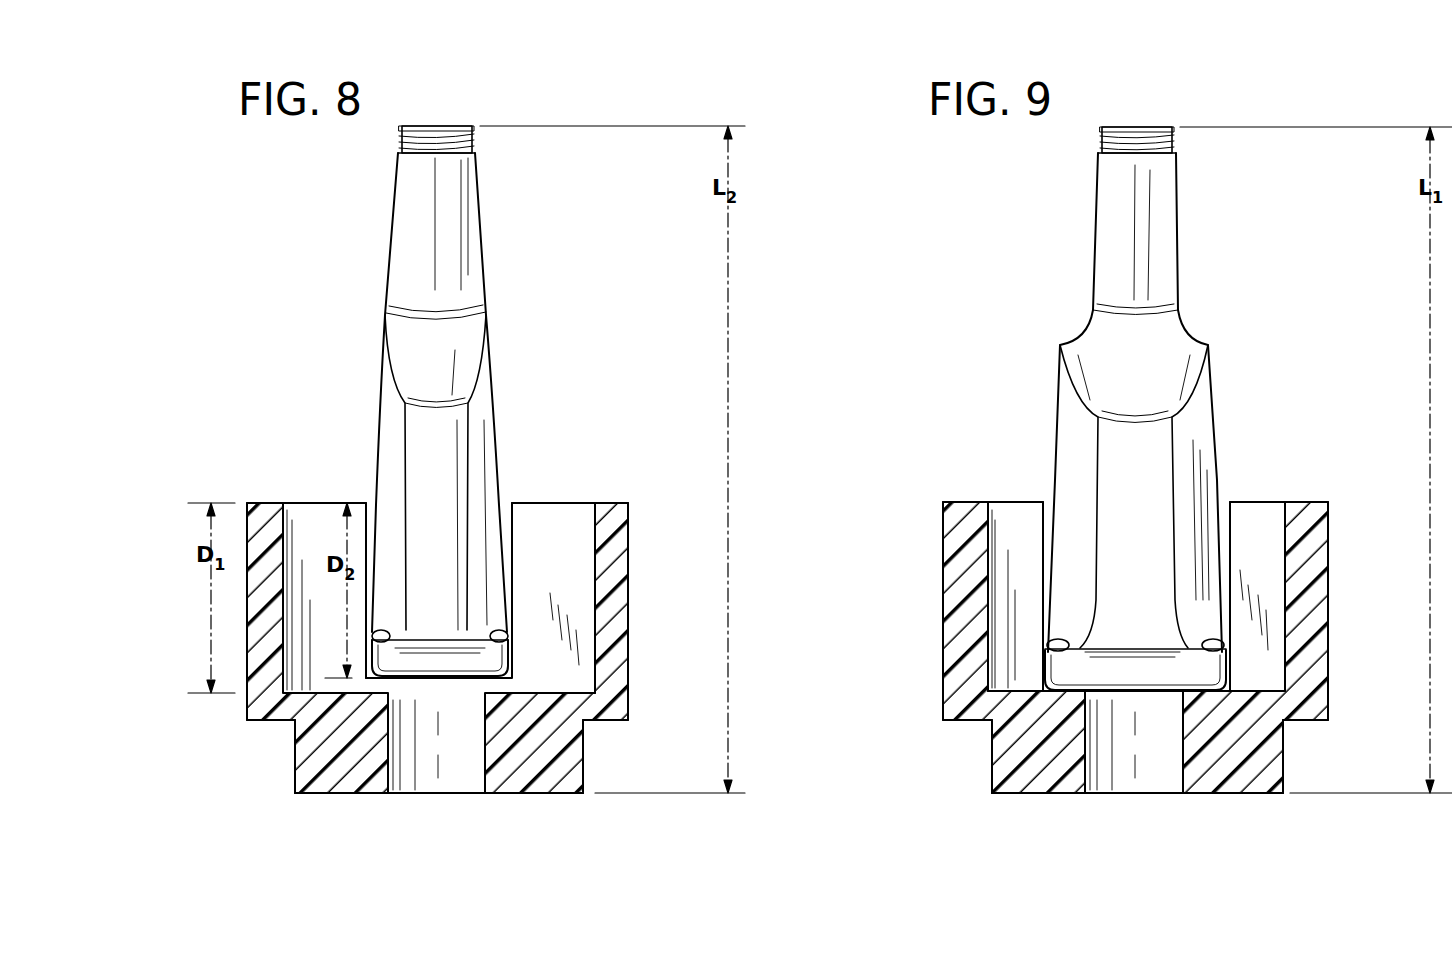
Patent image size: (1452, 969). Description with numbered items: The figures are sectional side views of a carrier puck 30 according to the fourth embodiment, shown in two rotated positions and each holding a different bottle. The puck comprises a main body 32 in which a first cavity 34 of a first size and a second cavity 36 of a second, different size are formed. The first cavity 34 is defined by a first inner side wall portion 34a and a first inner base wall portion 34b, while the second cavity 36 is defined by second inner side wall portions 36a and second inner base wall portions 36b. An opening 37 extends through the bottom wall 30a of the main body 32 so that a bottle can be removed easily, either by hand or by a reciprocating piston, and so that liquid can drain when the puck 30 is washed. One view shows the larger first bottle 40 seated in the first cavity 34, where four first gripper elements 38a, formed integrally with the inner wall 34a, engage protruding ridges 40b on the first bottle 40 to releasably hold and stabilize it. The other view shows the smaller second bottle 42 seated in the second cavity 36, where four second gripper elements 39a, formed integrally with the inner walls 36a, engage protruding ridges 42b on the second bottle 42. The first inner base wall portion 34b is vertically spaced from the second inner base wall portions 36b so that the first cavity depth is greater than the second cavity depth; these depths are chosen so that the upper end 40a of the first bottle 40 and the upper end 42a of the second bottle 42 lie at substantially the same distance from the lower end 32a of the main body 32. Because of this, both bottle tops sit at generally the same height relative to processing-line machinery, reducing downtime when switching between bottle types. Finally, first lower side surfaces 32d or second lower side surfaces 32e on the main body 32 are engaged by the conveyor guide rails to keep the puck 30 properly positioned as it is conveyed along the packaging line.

In FIG. 8, the carrier puck 30 is at (641, 534).
In FIG. 9, the carrier puck 30 is at (1336, 553).
In FIG. 8, the bottom wall 30a is at (513, 762).
In FIG. 9, the bottom wall 30a is at (1258, 778).
In FIG. 8, the main body 32 is at (617, 600).
In FIG. 9, the main body 32 is at (1320, 600).
In FIG. 8, the lower end 32a is at (542, 795).
In FIG. 9, the lower end 32a is at (1212, 795).
In FIG. 9, the first lower side surfaces 32d is at (1285, 755).
In FIG. 8, the second lower side surfaces 32e is at (295, 768).
In FIG. 8, the first cavity 34 is at (596, 510).
In FIG. 8, the first inner side wall portion 34a is at (593, 665).
In FIG. 9, the first inner side wall portion 34a is at (1236, 510).
In FIG. 8, the first inner base wall portion 34b is at (594, 702).
In FIG. 9, the first inner base wall portion 34b is at (1070, 685).
In FIG. 8, the second cavity 36 is at (497, 515).
In FIG. 8, the second inner side wall portions 36a is at (368, 525).
In FIG. 9, the second inner side wall portions 36a is at (1005, 515).
In FIG. 8, the second inner base wall portions 36b is at (396, 680).
In FIG. 9, the second inner base wall portions 36b is at (1013, 688).
In FIG. 8, the opening 37 is at (483, 760).
In FIG. 9, the opening 37 is at (1182, 762).
In FIG. 9, the first gripper elements 38a is at (1050, 645).
In FIG. 8, the second gripper elements 39a is at (505, 640).
In FIG. 9, the first bottle 40 is at (1165, 340).
In FIG. 9, the upper end 40a is at (1152, 125).
In FIG. 9, the protruding ridges 40b is at (1212, 647).
In FIG. 8, the second bottle 42 is at (458, 312).
In FIG. 8, the upper end 42a is at (450, 125).
In FIG. 8, the protruding ridges 42b is at (503, 565).